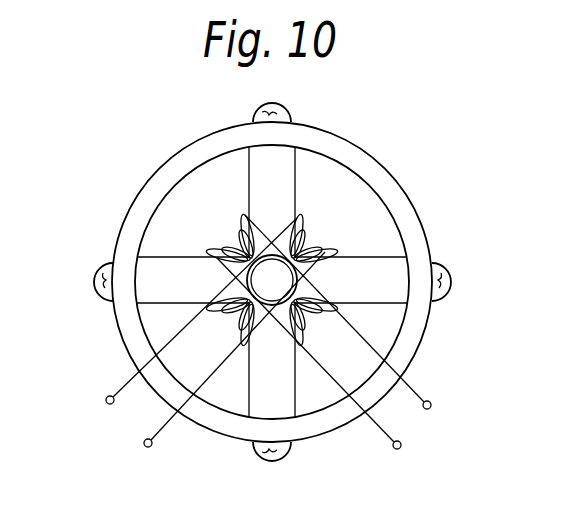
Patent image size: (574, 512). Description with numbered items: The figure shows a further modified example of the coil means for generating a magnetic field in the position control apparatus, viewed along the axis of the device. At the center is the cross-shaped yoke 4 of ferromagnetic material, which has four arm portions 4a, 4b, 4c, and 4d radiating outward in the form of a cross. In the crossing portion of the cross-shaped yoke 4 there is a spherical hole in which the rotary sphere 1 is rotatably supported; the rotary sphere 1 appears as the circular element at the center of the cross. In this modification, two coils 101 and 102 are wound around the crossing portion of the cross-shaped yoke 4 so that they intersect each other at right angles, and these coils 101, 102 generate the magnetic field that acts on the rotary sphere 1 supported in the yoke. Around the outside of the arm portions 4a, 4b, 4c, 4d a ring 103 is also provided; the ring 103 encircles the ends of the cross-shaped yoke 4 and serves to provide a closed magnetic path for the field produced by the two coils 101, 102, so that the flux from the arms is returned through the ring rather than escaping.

The rotary sphere 1 is at (283, 276).
The cross-shaped yoke 4 is at (266, 287).
The arm portion 4a is at (384, 290).
The arm portion 4b is at (282, 168).
The arm portion 4c is at (150, 283).
The arm portion 4d is at (253, 400).
The coil 101 is at (200, 388).
The coil 102 is at (338, 386).
The ring 103 is at (380, 170).